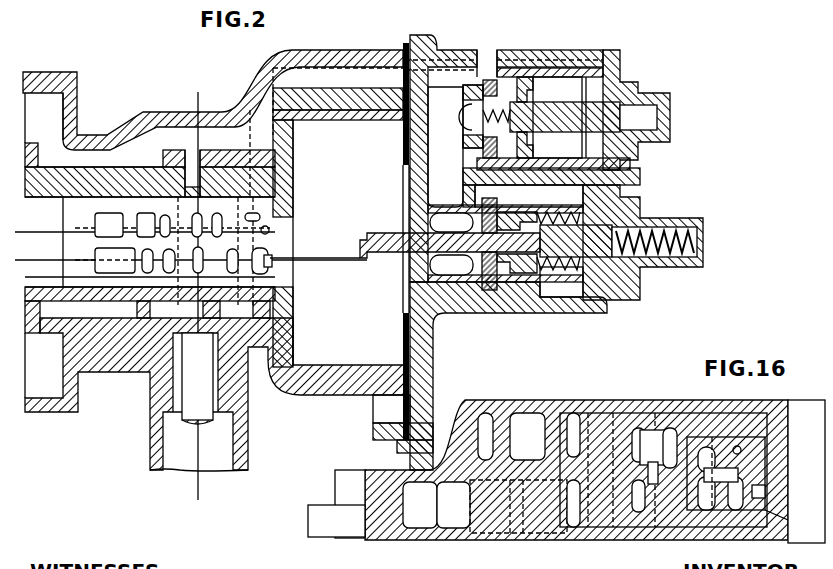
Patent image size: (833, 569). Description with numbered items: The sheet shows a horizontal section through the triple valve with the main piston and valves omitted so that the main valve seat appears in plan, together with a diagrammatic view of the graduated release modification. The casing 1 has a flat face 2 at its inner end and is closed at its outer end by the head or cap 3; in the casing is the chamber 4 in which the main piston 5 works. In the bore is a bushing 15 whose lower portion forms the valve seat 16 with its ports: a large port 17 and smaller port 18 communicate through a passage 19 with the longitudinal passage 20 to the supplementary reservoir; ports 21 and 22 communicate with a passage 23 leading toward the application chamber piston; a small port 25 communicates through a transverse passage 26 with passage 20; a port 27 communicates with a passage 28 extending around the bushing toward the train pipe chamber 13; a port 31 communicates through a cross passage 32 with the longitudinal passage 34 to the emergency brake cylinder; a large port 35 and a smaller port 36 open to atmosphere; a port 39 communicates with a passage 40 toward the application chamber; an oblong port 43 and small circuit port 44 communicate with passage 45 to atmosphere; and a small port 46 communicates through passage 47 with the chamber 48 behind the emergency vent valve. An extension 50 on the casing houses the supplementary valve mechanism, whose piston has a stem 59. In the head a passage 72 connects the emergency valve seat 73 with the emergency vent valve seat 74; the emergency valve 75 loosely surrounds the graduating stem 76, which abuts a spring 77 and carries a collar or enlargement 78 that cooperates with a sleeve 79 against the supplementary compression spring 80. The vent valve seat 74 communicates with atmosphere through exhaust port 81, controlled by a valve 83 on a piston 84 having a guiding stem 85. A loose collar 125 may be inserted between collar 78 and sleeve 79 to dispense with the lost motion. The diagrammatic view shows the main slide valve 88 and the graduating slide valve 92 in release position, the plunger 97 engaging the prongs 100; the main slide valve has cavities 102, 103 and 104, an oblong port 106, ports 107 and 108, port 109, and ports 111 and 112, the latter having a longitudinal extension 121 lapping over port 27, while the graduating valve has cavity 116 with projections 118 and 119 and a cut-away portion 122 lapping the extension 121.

In FIG. 2, the casing 1 is at (166, 114).
In FIG. 2, the flat face 2 is at (22, 80).
In FIG. 2, the head or cap 3 is at (15, 232).
In FIG. 2, the chamber 4 is at (319, 243).
In FIG. 2, the main piston 5 is at (193, 297).
In FIG. 2, the chamber 13 is at (583, 234).
In FIG. 2, the bushing 15 is at (280, 317).
In FIG. 2, the valve seat 16 is at (150, 265).
In FIG. 2, the large port 17 is at (105, 266).
In FIG. 16, the large port 17 is at (436, 505).
In FIG. 2, the smaller port 18 is at (150, 272).
In FIG. 2, the passage 19 is at (115, 310).
In FIG. 2, the longitudinal passage 20 is at (47, 353).
In FIG. 2, the port 21 is at (170, 275).
In FIG. 2, the port 22 is at (200, 250).
In FIG. 2, the passage 23 is at (150, 385).
In FIG. 2, the small port 25 is at (228, 262).
In FIG. 2, the transverse passage 26 is at (235, 310).
In FIG. 2, the port 27 is at (270, 252).
In FIG. 2, the passage 28 is at (270, 303).
In FIG. 2, the port 31 is at (109, 225).
In FIG. 16, the port 31 is at (488, 430).
In FIG. 2, the cross passage 32 is at (82, 225).
In FIG. 2, the longitudinal passage 34 is at (216, 101).
In FIG. 2, the large port 35 is at (147, 225).
In FIG. 16, the large port 35 is at (527, 436).
In FIG. 2, the smaller port 36 is at (150, 180).
In FIG. 16, the smaller port 36 is at (578, 413).
In FIG. 2, the port 39 is at (222, 165).
In FIG. 2, the passage 40 is at (188, 160).
In FIG. 2, the oblong port 43 is at (214, 220).
In FIG. 2, the small circuit port 44 is at (262, 222).
In FIG. 2, the passage 45 is at (290, 255).
In FIG. 2, the small port 46 is at (260, 213).
In FIG. 2, the passage 47 is at (362, 56).
In FIG. 2, the chamber 48 is at (553, 123).
In FIG. 2, the extension 50 is at (248, 444).
In FIG. 2, the stem 59 is at (214, 420).
In FIG. 2, the passage 72 is at (445, 147).
In FIG. 2, the emergency valve seat 73 is at (470, 282).
In FIG. 2, the emergency vent valve seat 74 is at (466, 103).
In FIG. 2, the emergency valve 75 is at (500, 205).
In FIG. 2, the graduating stem 76 is at (388, 252).
In FIG. 2, the spring 77 is at (672, 227).
In FIG. 2, the collar or enlargement 78 is at (505, 282).
In FIG. 2, the sleeve 79 is at (522, 282).
In FIG. 2, the supplementary compression spring 80 is at (575, 297).
In FIG. 2, the exhaust port 81 is at (495, 52).
In FIG. 2, the valve 83 is at (478, 78).
In FIG. 2, the piston 84 is at (522, 76).
In FIG. 2, the guiding stem 85 is at (612, 118).
In FIG. 16, the main slide valve 88 is at (366, 487).
In FIG. 16, the graduating slide valve 92 is at (775, 400).
In FIG. 16, the plunger 97 is at (537, 530).
In FIG. 16, the projections or prongs 100 is at (320, 530).
In FIG. 16, the large cavity 102 is at (415, 520).
In FIG. 16, the large cavity 103 is at (495, 436).
In FIG. 16, the narrow transverse cavity 104 is at (568, 530).
In FIG. 16, the oblong port 106 is at (612, 490).
In FIG. 16, the oblong port 107 is at (638, 428).
In FIG. 16, the oblong port 108 is at (640, 510).
In FIG. 16, the oblong port 109 is at (670, 430).
In FIG. 16, the oblong port 111 is at (706, 510).
In FIG. 16, the oblong port 112 is at (790, 516).
In FIG. 16, the cavity 116 is at (655, 440).
In FIG. 16, the projection 118 is at (660, 500).
In FIG. 16, the projection 119 is at (708, 447).
In FIG. 16, the longitudinal extension 121 is at (768, 492).
In FIG. 16, the cut-away portion 122 is at (745, 480).
In FIG. 2, the loose collar 125 is at (506, 352).